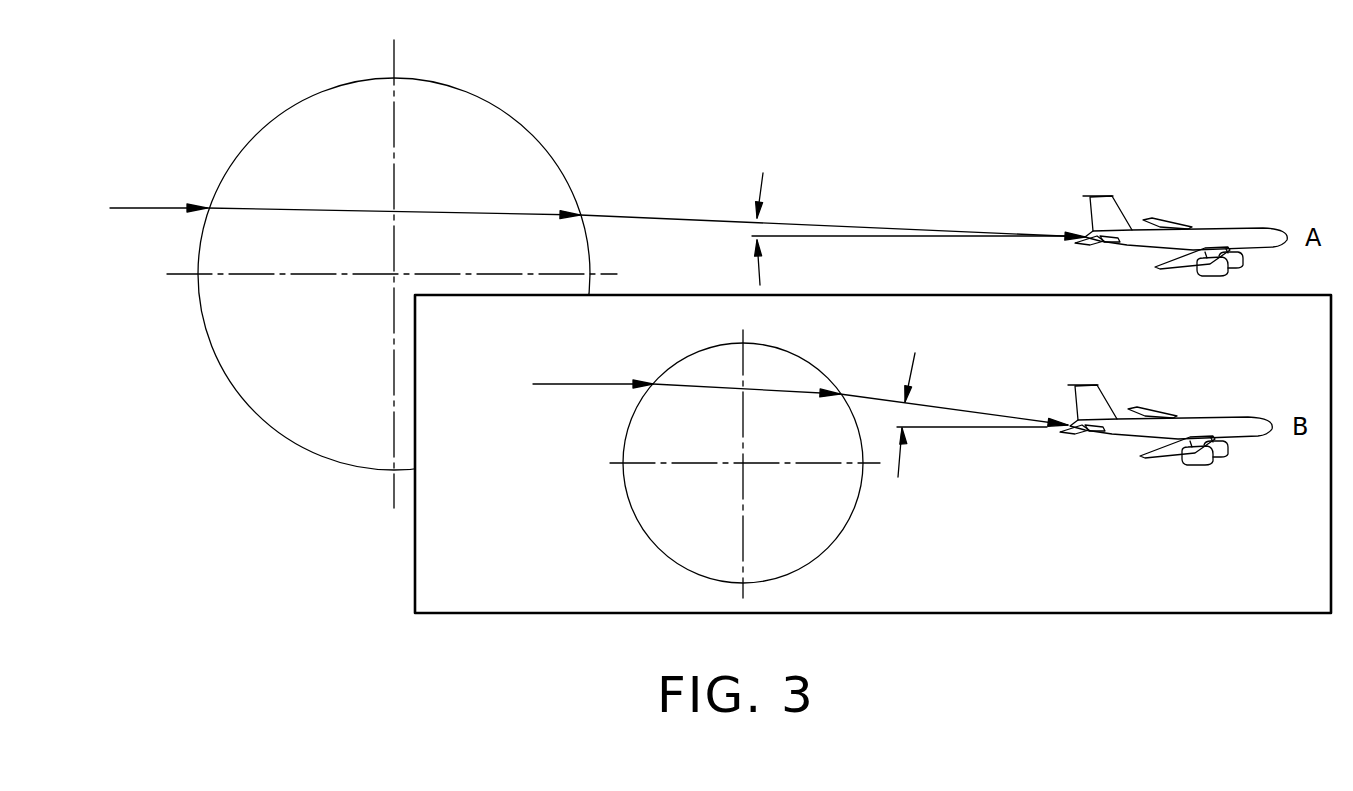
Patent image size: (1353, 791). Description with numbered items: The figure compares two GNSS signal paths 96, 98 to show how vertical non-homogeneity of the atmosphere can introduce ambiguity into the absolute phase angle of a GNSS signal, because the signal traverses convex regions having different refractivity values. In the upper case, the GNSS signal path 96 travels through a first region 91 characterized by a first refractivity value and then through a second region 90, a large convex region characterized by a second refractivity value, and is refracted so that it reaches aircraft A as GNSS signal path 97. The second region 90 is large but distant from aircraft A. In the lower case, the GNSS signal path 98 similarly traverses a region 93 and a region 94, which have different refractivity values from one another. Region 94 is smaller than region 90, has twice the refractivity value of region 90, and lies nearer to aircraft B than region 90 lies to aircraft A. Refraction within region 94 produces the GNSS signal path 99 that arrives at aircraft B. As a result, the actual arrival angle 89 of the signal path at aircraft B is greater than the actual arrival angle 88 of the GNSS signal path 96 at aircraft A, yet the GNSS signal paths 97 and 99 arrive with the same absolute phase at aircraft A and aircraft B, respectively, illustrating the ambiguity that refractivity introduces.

The actual arrival angle 88 is at (753, 276).
The actual arrival angle 89 is at (905, 462).
The second region 90 is at (332, 386).
The first region 91 is at (237, 497).
The region 93 is at (520, 560).
The region 94 is at (705, 518).
The GNSS signal path 96 is at (160, 207).
The GNSS signal path 97 is at (847, 226).
The GNSS signal path 98 is at (580, 383).
The GNSS signal path 99 is at (942, 404).